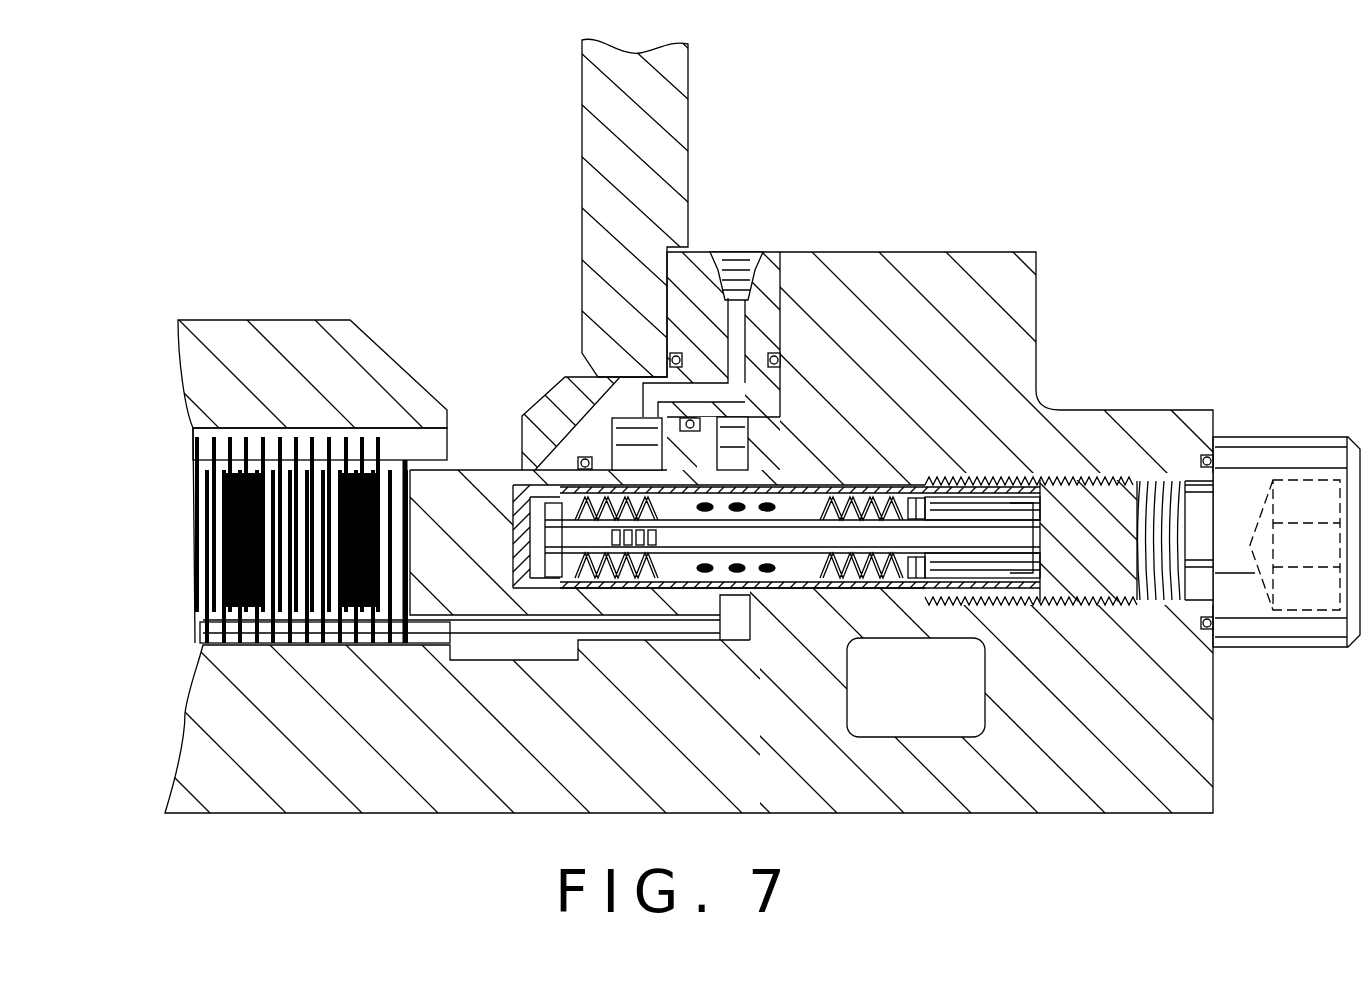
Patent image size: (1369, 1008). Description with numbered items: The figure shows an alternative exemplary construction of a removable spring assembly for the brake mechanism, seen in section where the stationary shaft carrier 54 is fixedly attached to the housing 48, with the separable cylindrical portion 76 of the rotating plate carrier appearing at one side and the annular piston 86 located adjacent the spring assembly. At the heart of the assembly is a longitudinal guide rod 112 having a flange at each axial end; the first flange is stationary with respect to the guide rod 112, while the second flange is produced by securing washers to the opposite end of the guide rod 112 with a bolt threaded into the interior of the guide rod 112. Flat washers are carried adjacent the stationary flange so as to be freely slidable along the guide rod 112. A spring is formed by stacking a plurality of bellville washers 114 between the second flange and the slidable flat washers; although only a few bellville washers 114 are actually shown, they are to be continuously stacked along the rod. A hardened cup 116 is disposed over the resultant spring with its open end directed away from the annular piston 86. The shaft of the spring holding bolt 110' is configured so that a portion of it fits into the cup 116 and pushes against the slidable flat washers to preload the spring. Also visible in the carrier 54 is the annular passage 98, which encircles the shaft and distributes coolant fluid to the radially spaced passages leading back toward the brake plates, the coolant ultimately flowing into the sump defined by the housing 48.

The housing 48 is at (580, 152).
The separable cylindrical portion 76 is at (272, 318).
The annular piston 86 is at (478, 470).
The stationary shaft carrier 54 is at (1085, 408).
The spring holding bolt 110' is at (1142, 505).
The hardened cup 116 is at (812, 480).
The bellville washers 114 is at (895, 490).
The longitudinal guide rod 112 is at (792, 560).
The annular passage 98 is at (937, 707).